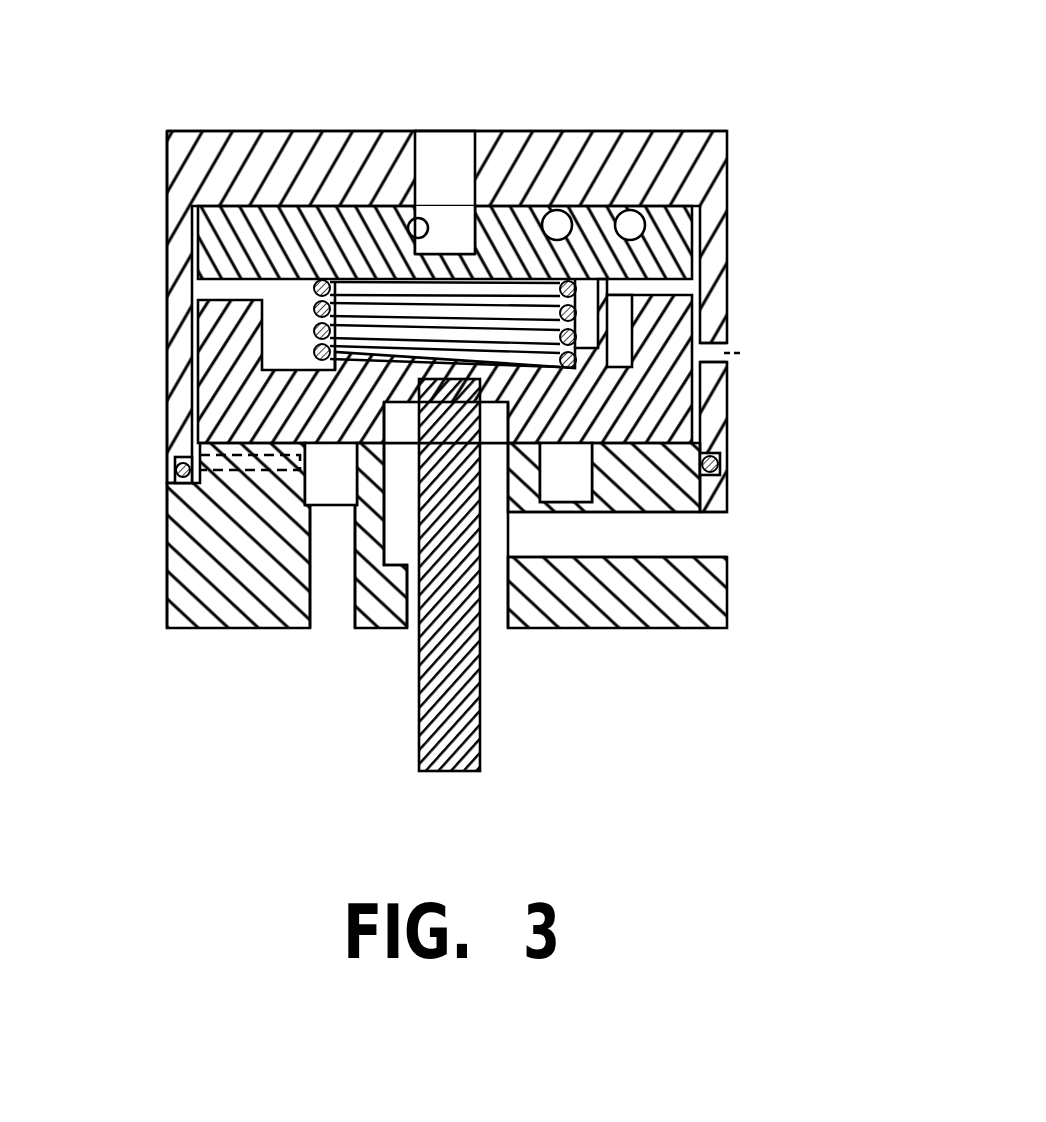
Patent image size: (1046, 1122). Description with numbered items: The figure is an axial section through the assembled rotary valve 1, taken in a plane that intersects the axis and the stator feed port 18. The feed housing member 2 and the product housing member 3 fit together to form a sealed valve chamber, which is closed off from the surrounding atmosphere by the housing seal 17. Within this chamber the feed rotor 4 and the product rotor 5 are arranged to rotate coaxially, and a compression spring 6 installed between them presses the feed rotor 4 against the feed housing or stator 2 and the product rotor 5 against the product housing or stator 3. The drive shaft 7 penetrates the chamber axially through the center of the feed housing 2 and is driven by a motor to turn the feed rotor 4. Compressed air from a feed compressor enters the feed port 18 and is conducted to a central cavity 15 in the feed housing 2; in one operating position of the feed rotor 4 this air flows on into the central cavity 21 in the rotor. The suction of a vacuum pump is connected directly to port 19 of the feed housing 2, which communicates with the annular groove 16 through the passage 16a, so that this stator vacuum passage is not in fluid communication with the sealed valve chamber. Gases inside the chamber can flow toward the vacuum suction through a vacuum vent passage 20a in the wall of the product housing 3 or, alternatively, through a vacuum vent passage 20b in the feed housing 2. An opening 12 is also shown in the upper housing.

The rotary valve 1 is at (795, 88).
The feed housing member 2 is at (168, 610).
The product housing member 3 is at (289, 130).
The feed rotor 4 is at (213, 392).
The product rotor 5 is at (213, 238).
The compression spring 6 is at (318, 332).
The drive shaft 7 is at (419, 712).
The opening 12 is at (442, 130).
The central cavity 15 is at (495, 545).
The annular groove 16 is at (313, 478).
The passage 16a is at (328, 560).
The housing seal 17 is at (724, 465).
The feed port 18 is at (727, 540).
The port 19 is at (336, 630).
The vacuum vent passage 20a is at (722, 352).
The vacuum vent passage 20b is at (240, 442).
The central cavity 21 is at (515, 404).